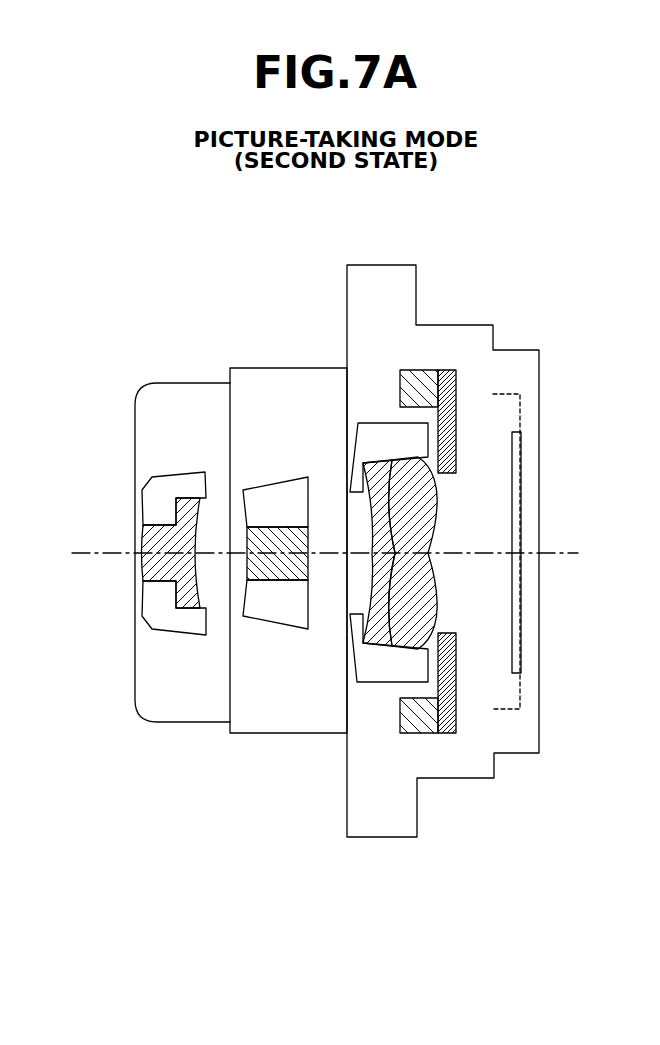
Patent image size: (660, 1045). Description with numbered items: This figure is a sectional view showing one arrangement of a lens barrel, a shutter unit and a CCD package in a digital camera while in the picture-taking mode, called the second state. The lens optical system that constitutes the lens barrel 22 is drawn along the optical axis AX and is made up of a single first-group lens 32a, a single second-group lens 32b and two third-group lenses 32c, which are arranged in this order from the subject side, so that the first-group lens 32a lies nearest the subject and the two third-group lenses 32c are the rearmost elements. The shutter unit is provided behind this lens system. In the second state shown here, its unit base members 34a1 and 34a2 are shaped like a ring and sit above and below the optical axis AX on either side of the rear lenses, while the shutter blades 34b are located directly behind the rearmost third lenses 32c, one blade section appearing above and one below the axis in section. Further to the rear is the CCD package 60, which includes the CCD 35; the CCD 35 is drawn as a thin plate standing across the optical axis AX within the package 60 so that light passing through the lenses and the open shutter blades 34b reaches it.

The lens barrel 22 is at (137, 358).
The first-group lens 32a is at (180, 530).
The second-group lens 32b is at (265, 535).
The third-group lenses 32c is at (397, 502).
The unit base member 34a1 is at (424, 378).
The unit base member 34a2 is at (425, 714).
The shutter blades 34b is at (457, 413).
The CCD 35 is at (515, 479).
The CCD package 60 is at (539, 368).
The optical axis AX is at (86, 556).